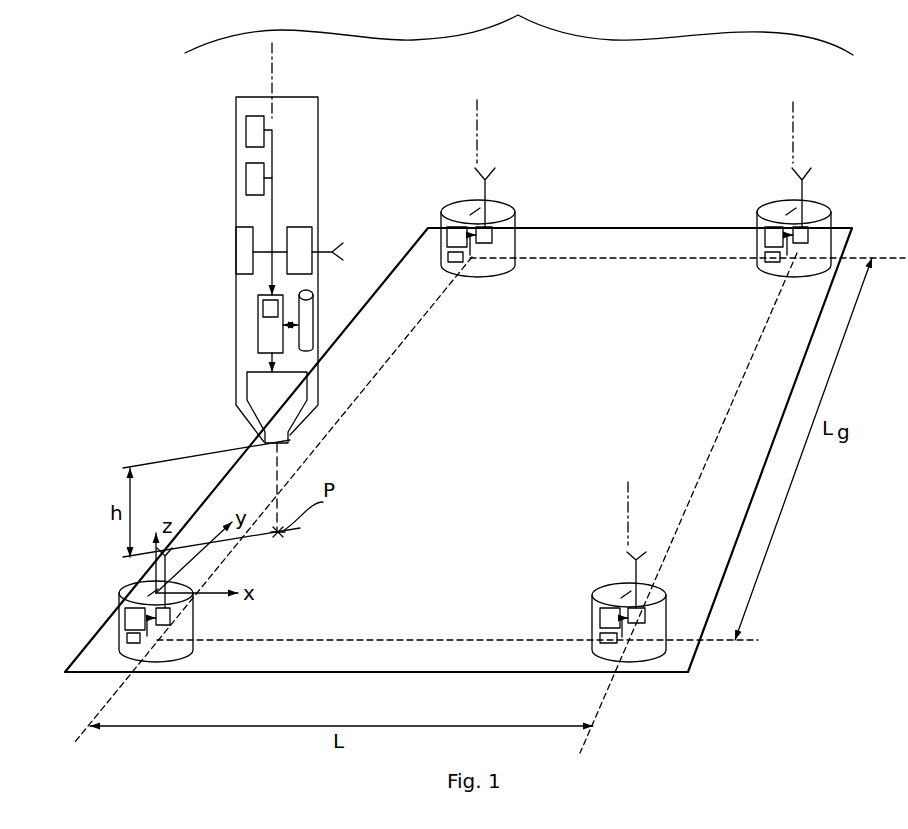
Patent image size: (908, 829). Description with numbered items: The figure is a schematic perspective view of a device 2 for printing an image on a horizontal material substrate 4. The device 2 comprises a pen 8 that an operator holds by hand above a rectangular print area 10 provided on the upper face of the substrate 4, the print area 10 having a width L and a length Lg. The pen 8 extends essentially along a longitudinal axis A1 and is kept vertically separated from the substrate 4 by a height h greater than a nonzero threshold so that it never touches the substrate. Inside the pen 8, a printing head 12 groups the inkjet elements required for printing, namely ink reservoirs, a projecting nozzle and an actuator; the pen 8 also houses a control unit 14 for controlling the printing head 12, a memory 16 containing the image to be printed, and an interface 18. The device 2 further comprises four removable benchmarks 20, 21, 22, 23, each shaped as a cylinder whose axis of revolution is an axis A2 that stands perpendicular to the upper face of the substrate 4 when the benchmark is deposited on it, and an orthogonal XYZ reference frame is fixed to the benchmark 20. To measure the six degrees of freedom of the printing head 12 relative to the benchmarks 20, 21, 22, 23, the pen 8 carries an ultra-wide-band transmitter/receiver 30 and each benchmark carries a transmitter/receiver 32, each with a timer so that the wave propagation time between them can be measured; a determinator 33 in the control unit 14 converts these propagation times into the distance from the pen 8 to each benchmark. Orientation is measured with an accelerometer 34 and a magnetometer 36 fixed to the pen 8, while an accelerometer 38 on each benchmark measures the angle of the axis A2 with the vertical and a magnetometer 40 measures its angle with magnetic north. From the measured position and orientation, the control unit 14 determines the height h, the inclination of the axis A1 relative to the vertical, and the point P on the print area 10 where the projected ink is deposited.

The device 2 is at (519, 27).
The material substrate 4 is at (698, 642).
The pen 8 is at (320, 108).
The print area 10 is at (608, 258).
The printing head 12 is at (268, 395).
The control unit 14 is at (260, 338).
The memory 16 is at (308, 315).
The interface 18 is at (243, 260).
The benchmark 20 is at (112, 602).
The benchmark 21 is at (672, 600).
The benchmark 22 is at (832, 207).
The benchmark 23 is at (528, 208).
The transmitter/receiver 30 is at (303, 235).
The transmitter/receiver 32 is at (492, 239).
The determinator 33 is at (270, 308).
The accelerometer 34 is at (255, 183).
The magnetometer 36 is at (255, 127).
The accelerometer 38 is at (462, 258).
The magnetometer 40 is at (448, 235).
The longitudinal axis A1 is at (272, 70).
The axis A2 is at (480, 132).